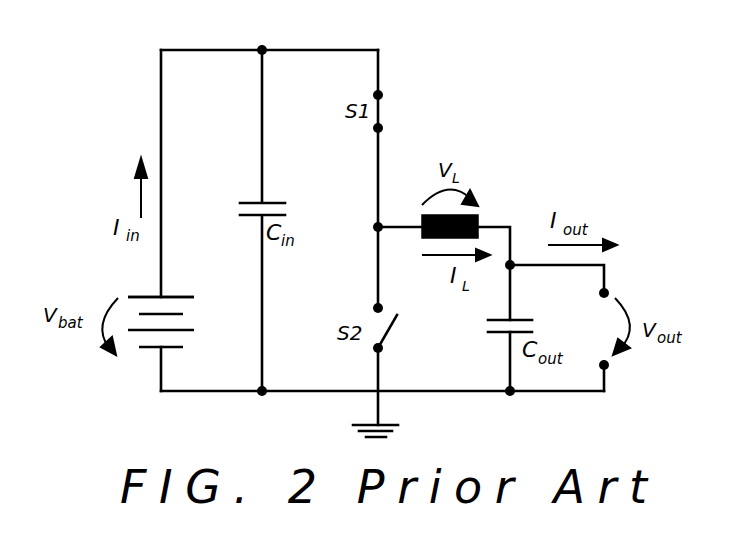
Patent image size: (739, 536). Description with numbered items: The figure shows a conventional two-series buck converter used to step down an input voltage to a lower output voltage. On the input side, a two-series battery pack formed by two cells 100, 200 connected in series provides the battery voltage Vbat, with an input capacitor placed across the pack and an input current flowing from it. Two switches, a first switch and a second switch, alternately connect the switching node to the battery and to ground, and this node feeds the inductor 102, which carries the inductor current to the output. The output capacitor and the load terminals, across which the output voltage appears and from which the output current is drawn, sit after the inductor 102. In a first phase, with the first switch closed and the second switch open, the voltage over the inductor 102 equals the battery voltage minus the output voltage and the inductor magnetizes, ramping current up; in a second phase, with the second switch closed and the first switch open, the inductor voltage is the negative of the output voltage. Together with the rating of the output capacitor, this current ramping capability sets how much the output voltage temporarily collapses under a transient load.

The cell 100 is at (138, 358).
The inductor 102 is at (482, 219).
The cell 200 is at (134, 292).